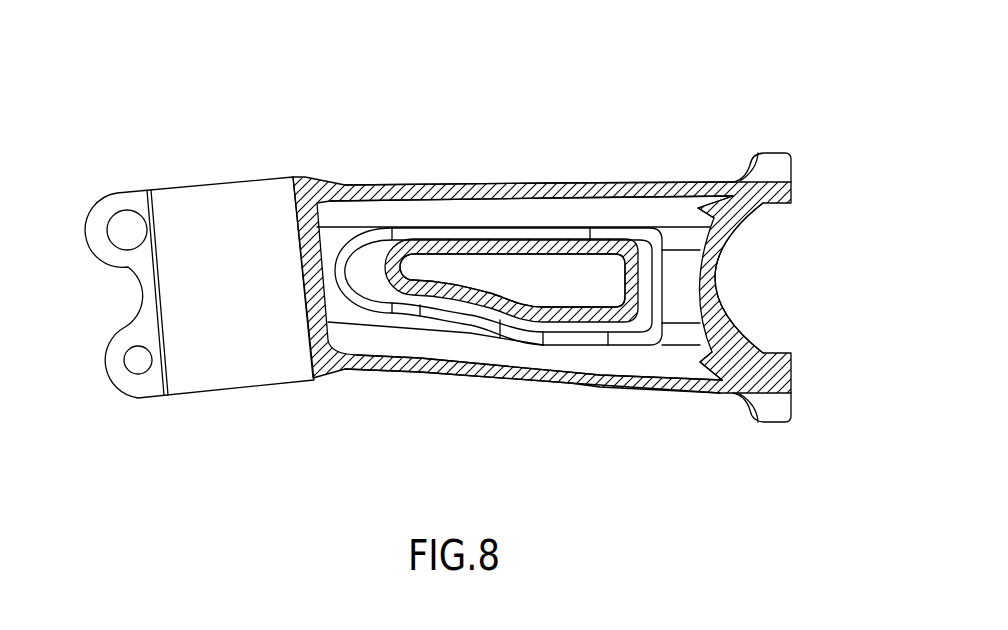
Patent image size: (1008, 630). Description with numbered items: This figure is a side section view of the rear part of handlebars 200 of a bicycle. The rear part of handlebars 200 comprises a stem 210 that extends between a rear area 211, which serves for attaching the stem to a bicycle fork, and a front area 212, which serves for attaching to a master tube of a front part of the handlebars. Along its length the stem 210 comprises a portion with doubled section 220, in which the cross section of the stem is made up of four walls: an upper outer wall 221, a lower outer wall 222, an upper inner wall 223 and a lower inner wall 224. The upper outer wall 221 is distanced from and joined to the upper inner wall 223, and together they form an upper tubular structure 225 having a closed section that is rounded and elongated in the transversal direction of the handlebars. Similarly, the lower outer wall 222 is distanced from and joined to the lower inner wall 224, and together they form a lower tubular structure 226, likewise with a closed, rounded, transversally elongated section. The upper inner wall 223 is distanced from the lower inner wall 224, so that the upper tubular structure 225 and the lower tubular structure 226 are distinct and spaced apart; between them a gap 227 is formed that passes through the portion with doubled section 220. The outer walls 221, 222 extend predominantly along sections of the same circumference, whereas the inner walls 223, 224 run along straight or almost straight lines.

The rear part of handlebars 200 is at (598, 78).
The stem 210 is at (695, 159).
The rear area 211 is at (197, 353).
The front area 212 is at (766, 200).
The portion with doubled section 220 is at (448, 173).
The upper outer wall 221 is at (503, 185).
The lower outer wall 222 is at (560, 352).
The upper inner wall 223 is at (566, 246).
The lower inner wall 224 is at (478, 308).
The upper tubular structure 225 is at (660, 213).
The lower tubular structure 226 is at (660, 362).
The gap 227 is at (607, 284).